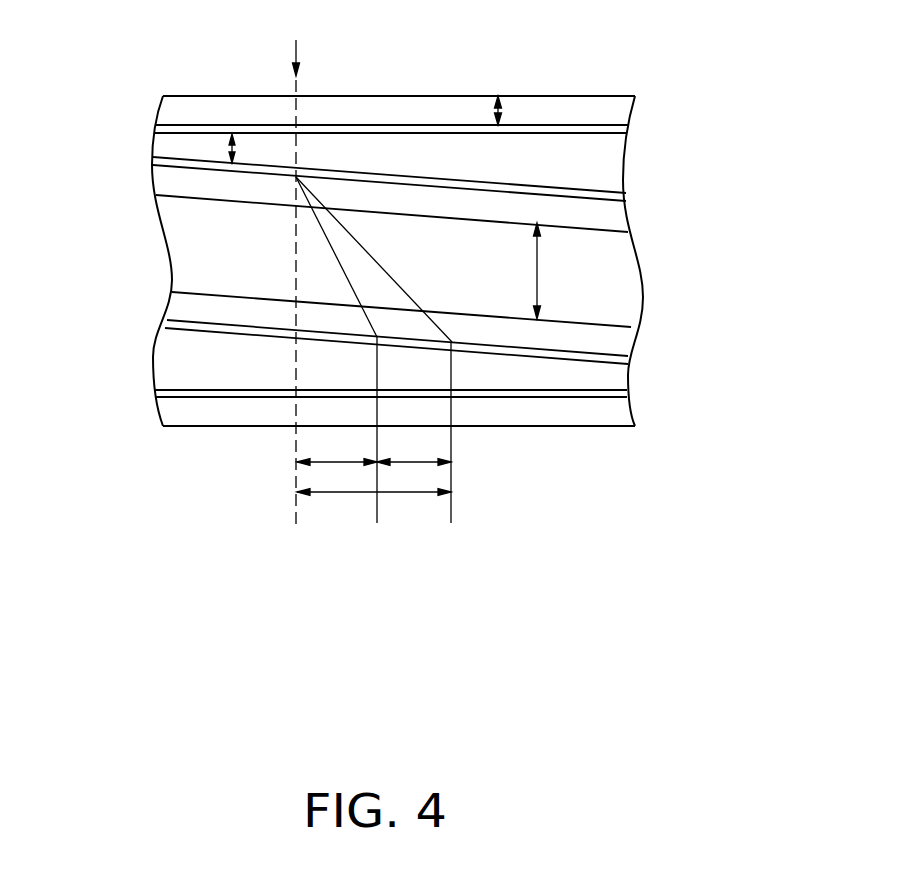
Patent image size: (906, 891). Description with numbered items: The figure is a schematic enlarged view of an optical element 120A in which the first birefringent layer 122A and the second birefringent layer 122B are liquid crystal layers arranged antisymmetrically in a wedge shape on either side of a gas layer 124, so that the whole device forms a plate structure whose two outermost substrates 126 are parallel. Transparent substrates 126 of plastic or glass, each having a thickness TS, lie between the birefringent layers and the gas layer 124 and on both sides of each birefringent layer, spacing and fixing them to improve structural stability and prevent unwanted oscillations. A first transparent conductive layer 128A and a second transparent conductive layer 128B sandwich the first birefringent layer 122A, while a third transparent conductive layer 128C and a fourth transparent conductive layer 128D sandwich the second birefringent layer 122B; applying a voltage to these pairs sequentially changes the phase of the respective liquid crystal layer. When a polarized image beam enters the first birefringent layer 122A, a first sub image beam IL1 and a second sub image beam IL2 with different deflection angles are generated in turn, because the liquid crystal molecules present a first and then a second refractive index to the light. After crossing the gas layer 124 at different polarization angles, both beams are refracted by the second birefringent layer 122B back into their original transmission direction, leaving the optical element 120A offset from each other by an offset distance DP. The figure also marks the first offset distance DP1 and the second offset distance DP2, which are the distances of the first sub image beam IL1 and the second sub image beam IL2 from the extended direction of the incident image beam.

The optical element 120A is at (773, 567).
The first birefringent layer 122A is at (612, 165).
The second birefringent layer 122B is at (612, 372).
The gas layer 124 is at (610, 282).
The substrates 126 is at (175, 412).
The first transparent conductive layer 128A is at (260, 135).
The second transparent conductive layer 128B is at (202, 165).
The third transparent conductive layer 128C is at (202, 327).
The fourth transparent conductive layer 128D is at (222, 393).
The thickness of the substrate TS is at (505, 110).
The first sub image beam IL1 is at (377, 508).
The second sub image beam IL2 is at (451, 508).
The offset distance DP is at (417, 462).
The first offset distance DP1 is at (332, 460).
The second offset distance DP2 is at (338, 492).